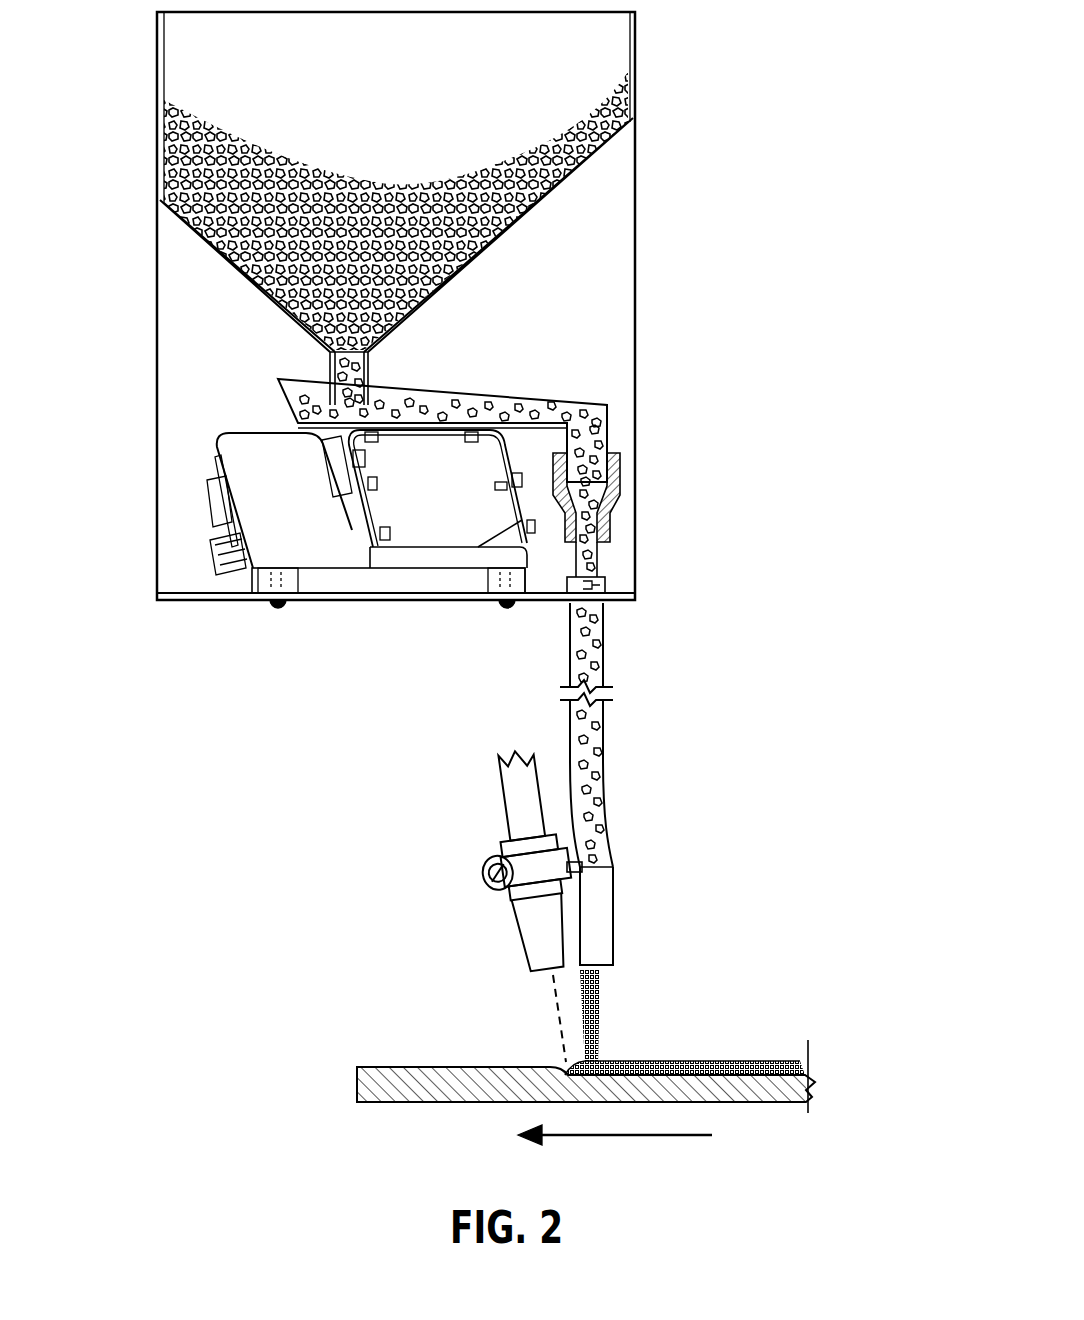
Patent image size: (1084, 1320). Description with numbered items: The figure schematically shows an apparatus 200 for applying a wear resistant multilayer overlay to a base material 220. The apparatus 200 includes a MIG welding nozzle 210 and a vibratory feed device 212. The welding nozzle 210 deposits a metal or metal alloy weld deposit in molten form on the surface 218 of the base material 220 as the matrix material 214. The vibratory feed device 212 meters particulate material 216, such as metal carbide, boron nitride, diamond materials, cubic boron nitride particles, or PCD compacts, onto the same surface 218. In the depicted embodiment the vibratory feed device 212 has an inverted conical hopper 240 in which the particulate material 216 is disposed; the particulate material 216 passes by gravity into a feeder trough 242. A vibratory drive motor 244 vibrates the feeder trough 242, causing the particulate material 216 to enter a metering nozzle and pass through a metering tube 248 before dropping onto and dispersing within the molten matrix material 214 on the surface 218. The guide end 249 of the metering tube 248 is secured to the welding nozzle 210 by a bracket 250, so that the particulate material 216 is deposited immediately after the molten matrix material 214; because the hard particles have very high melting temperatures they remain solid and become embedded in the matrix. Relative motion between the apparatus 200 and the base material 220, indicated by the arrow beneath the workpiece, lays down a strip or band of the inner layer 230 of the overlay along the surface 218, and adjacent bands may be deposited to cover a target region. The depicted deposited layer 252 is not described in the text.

The apparatus 200 is at (712, 653).
The vibratory feed device 212 is at (712, 295).
The particulate material 216 is at (508, 145).
The inverted conical hopper 240 is at (533, 208).
The feeder trough 242 is at (513, 396).
The vibratory drive motor 244 is at (257, 443).
The metering tube 248 is at (608, 800).
The guide end 249 is at (605, 948).
The bracket 250 is at (582, 868).
The MIG welding nozzle 210 is at (517, 920).
The matrix material 214 is at (560, 1026).
The surface 218 is at (390, 1058).
The base material 220 is at (435, 1103).
The deposited powder layer 252 is at (710, 1060).
The inner layer 230 is at (773, 1060).